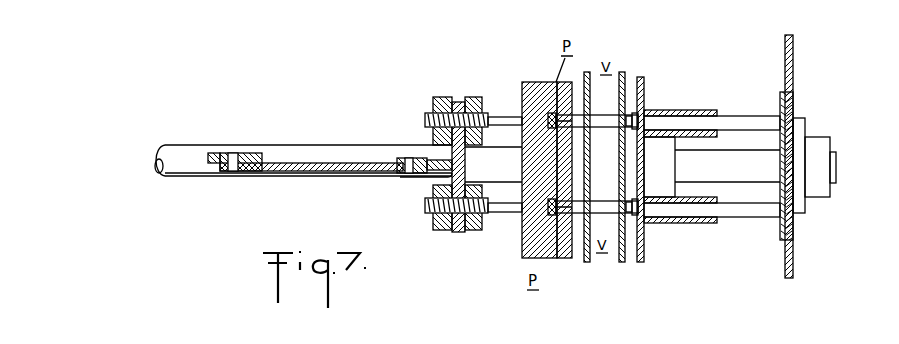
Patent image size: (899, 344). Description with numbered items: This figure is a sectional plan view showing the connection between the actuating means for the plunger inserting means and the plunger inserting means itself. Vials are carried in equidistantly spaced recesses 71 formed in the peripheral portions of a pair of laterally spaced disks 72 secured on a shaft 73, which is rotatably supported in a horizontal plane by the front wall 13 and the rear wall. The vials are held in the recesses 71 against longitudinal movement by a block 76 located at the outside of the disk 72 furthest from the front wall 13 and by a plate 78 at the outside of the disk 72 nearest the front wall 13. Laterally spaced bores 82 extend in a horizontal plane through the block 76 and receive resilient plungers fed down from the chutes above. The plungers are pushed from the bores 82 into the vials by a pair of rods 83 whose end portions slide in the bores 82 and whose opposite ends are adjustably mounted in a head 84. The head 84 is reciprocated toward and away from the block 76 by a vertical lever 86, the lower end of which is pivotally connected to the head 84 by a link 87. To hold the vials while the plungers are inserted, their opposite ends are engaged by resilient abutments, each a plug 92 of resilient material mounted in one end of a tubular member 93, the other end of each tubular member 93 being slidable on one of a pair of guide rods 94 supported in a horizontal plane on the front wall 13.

The front wall 13 is at (794, 74).
The recesses 71 is at (590, 250).
The disks 72 is at (605, 115).
The shaft 73 is at (190, 165).
The block 76 is at (527, 255).
The plate 78 is at (645, 248).
The bores 82 is at (553, 85).
The rods 83 is at (500, 115).
The head 84 is at (466, 163).
The vertical lever 86 is at (212, 152).
The link 87 is at (333, 163).
The plug 92 is at (637, 128).
The tubular members 93 is at (698, 160).
The guide rods 94 is at (750, 158).